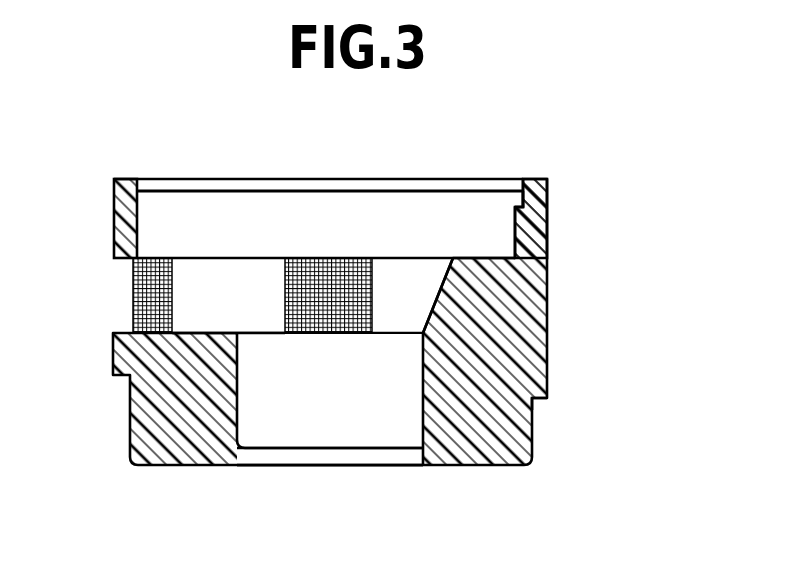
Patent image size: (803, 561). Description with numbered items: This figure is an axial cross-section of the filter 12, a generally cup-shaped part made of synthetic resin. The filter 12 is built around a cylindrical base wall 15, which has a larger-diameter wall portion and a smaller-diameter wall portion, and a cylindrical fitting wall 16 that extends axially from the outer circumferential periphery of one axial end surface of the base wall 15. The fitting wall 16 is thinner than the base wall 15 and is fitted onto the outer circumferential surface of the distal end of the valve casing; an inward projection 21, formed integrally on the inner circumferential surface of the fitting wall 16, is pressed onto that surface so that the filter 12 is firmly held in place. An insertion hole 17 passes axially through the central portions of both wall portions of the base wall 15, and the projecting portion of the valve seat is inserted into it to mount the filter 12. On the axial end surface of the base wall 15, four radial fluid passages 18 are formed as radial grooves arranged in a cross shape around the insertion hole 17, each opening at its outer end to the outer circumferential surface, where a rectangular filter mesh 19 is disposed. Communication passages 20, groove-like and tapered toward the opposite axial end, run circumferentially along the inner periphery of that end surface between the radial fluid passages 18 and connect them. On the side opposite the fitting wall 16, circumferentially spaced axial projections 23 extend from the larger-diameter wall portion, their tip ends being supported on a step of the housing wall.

The filter 12 is at (361, 326).
The base wall 15 is at (485, 304).
The fitting wall 16 is at (547, 217).
The insertion hole 17 is at (423, 405).
The radial fluid passages 18 is at (205, 275).
The filter mesh 19 is at (285, 270).
The communication passages 20 is at (432, 292).
The inward projection 21 is at (513, 232).
The axial projections 23 is at (537, 398).